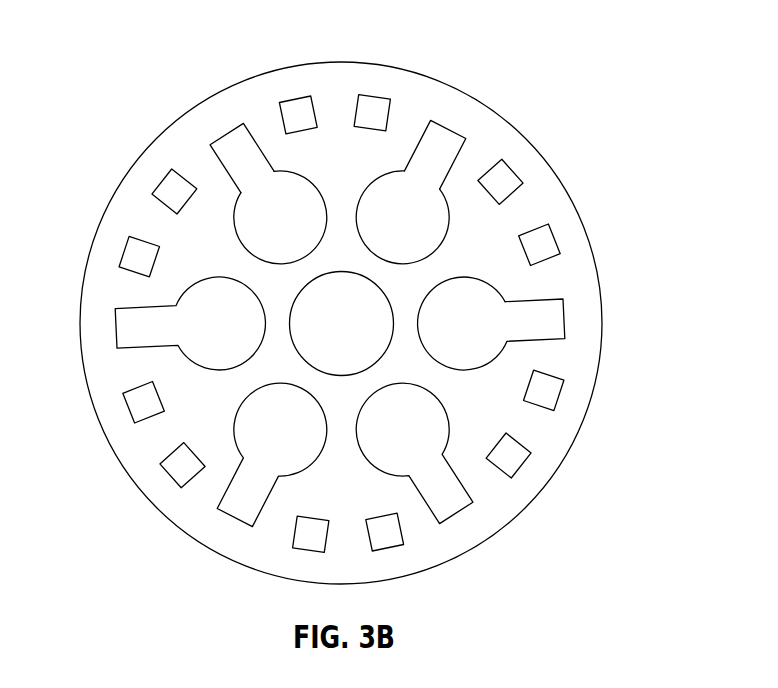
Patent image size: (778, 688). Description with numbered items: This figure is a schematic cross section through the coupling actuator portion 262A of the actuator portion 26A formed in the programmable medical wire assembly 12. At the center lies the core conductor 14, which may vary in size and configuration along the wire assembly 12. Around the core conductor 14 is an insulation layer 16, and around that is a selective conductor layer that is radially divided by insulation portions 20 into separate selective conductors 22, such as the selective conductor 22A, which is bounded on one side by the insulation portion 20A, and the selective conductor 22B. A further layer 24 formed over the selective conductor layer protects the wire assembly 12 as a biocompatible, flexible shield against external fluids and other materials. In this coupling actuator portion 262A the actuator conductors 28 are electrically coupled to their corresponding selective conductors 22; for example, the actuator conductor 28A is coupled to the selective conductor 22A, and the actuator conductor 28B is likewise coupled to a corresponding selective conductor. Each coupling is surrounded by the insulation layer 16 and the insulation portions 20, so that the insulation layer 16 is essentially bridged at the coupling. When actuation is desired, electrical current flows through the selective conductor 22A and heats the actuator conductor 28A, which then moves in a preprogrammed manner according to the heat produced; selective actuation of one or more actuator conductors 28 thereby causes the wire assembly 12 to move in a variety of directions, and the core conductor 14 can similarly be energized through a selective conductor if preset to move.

The actuator portion 26A is at (417, 37).
The coupling actuator portion 262A is at (500, 70).
The wire assembly 12 is at (148, 148).
The core conductor 14 is at (327, 318).
The insulation layer 16 is at (475, 407).
The insulation portions 20 is at (487, 478).
The insulation portion 20A is at (543, 362).
The selective conductors 22 is at (437, 143).
The selective conductor 22A is at (552, 330).
The selective conductor 22B is at (233, 143).
The layer 24 is at (505, 528).
The actuator conductors 28 is at (400, 210).
The actuator conductor 28A is at (460, 292).
The actuator conductor 28B is at (300, 190).